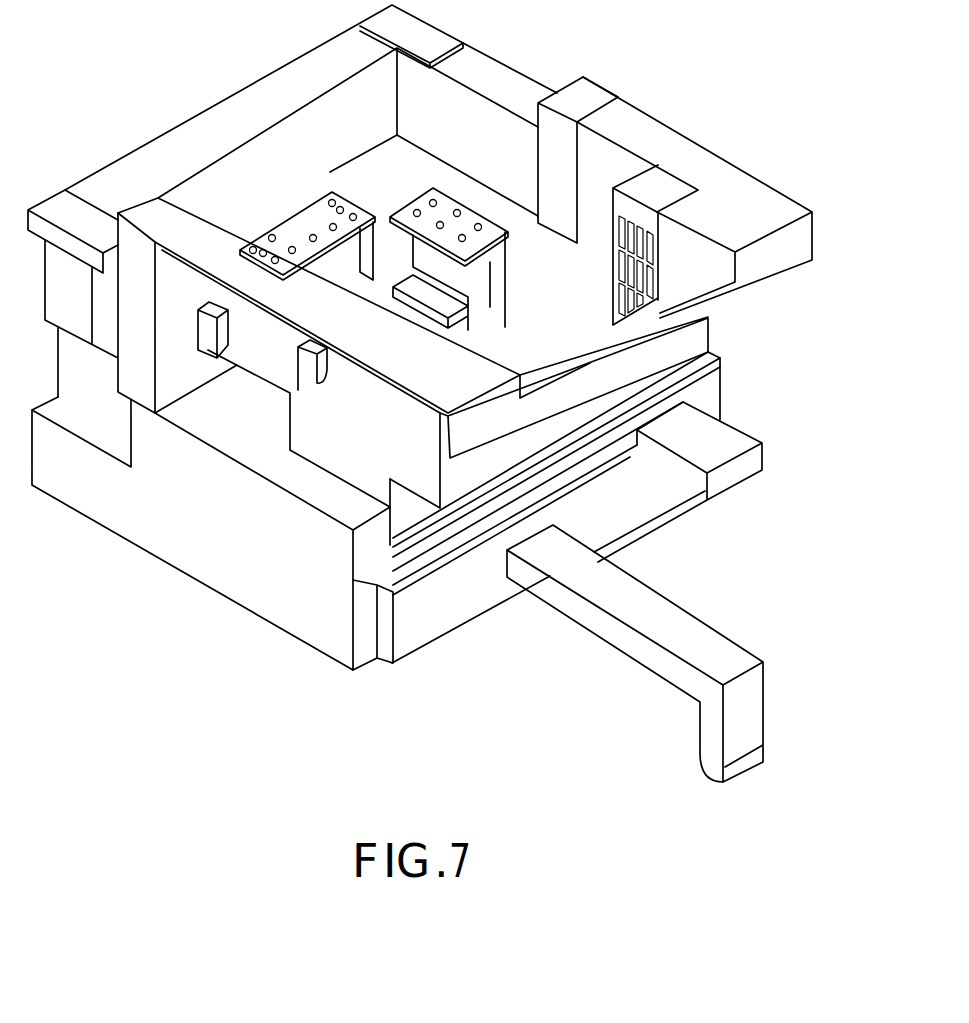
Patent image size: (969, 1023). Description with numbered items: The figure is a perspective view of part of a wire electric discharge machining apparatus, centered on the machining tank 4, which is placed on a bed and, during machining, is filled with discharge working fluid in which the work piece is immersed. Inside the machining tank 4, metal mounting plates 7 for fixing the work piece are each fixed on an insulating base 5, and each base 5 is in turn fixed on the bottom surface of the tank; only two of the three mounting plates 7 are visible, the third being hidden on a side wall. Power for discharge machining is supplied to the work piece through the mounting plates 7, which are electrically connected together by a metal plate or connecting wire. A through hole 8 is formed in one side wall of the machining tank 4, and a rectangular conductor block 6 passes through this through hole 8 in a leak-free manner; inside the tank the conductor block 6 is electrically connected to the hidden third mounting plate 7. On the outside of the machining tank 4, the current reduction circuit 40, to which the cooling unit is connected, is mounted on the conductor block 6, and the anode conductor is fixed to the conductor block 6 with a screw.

The machining tank 4 is at (420, 478).
The insulating base 5 is at (352, 260).
The conductor block 6 is at (262, 368).
The mounting plate 7 is at (292, 218).
The through hole 8 is at (308, 373).
The current reduction circuit 40 is at (205, 308).